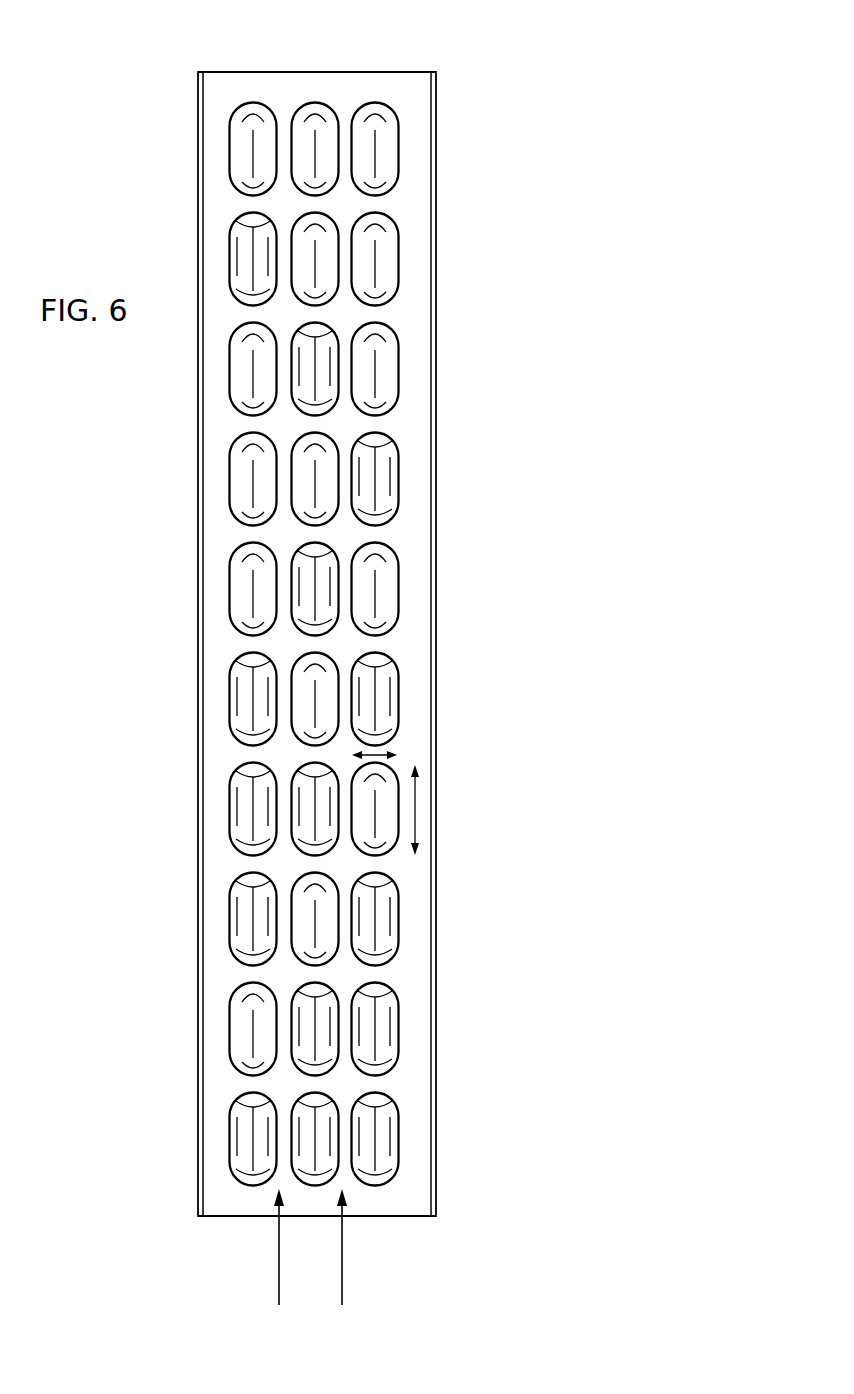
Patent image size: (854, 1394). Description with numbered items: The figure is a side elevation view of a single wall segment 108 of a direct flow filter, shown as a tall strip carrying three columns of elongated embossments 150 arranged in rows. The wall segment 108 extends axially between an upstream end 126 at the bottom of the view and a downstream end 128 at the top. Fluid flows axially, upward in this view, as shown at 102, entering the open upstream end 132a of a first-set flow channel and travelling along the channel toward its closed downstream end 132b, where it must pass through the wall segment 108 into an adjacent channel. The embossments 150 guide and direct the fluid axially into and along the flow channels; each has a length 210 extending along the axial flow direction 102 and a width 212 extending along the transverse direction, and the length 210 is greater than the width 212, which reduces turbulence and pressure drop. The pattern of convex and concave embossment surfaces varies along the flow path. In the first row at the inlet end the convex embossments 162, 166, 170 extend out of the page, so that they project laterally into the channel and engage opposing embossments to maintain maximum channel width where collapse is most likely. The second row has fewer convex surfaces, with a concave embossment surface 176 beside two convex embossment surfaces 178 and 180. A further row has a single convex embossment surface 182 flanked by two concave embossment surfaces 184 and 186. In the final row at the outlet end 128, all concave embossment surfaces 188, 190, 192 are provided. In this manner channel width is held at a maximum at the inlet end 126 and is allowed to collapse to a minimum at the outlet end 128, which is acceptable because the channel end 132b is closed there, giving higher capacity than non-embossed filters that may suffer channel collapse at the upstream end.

The axial flow direction 102 is at (279, 1248).
The wall segment 108 is at (215, 647).
The upstream end 126 is at (228, 1217).
The downstream end 128 is at (237, 70).
The open upstream end 132a is at (390, 1209).
The closed downstream end 132b is at (375, 80).
The embossment 150 is at (415, 669).
The convex embossment 162 is at (232, 1098).
The convex embossment 166 is at (320, 1093).
The convex embossment 170 is at (387, 1100).
The concave embossment surface 176 is at (233, 988).
The convex embossment surface 178 is at (330, 982).
The convex embossment surface 180 is at (385, 990).
The convex embossment surface 182 is at (327, 547).
The concave embossment surface 184 is at (230, 547).
The concave embossment surface 186 is at (393, 547).
The concave embossment surface 188 is at (233, 108).
The concave embossment surface 190 is at (330, 108).
The concave embossment surface 192 is at (397, 112).
The length 210 is at (415, 812).
The width 212 is at (373, 752).